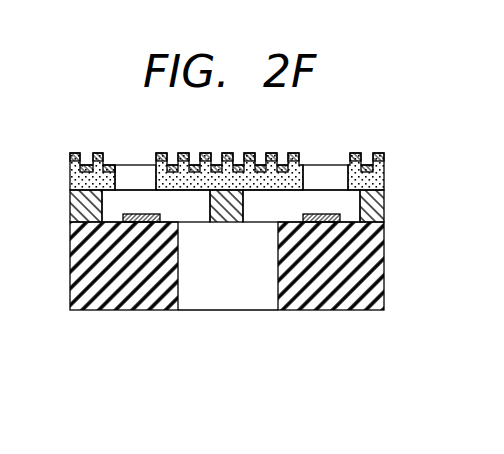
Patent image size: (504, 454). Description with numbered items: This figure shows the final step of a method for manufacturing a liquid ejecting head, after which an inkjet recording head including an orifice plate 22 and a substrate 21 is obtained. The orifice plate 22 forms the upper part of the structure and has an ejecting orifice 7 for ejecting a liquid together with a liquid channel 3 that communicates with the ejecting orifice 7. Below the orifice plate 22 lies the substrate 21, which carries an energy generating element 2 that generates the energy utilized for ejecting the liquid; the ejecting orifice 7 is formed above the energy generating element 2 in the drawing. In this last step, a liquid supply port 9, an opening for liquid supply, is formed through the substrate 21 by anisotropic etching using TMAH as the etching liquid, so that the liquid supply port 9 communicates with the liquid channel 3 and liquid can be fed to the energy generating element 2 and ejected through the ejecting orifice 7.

The energy generating element 2 is at (127, 225).
The liquid channel 3 is at (132, 203).
The ejecting orifice 7 is at (321, 172).
The liquid supply port 9 is at (222, 300).
The substrate 21 is at (373, 270).
The orifice plate 22 is at (390, 153).